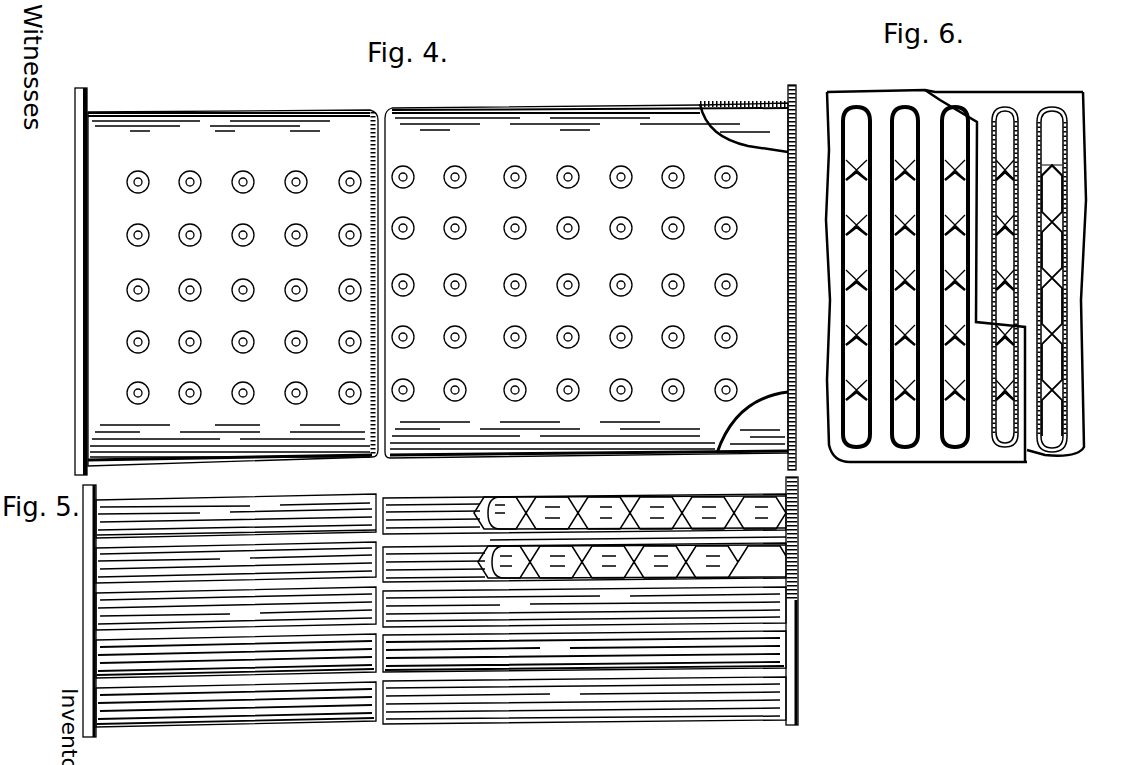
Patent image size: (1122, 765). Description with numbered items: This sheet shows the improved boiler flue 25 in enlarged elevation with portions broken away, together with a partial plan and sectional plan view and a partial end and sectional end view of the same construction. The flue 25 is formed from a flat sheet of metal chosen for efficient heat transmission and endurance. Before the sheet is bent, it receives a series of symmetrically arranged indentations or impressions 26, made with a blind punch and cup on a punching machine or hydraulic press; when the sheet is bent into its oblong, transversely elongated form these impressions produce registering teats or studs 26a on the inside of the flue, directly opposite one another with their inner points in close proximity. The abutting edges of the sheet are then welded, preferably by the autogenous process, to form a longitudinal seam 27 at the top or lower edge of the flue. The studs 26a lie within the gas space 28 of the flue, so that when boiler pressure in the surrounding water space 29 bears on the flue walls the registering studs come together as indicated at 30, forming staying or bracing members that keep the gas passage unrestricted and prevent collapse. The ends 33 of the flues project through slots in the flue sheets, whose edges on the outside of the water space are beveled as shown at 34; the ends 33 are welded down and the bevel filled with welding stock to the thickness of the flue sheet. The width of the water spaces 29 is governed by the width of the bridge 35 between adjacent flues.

In FIG. 4, the flue 25 is at (568, 122).
In FIG. 5, the flue 25 is at (320, 515).
In FIG. 4, the indentations or impressions 26 is at (514, 168).
In FIG. 5, the teats or studs 26a is at (678, 496).
In FIG. 4, the longitudinal seam 27 is at (705, 106).
In FIG. 6, the longitudinal seam 27 is at (1048, 106).
In FIG. 5, the gas space 28 is at (800, 506).
In FIG. 6, the gas space 28 is at (1000, 434).
In FIG. 5, the water space 29 is at (798, 584).
In FIG. 6, the water space 29 is at (977, 121).
In FIG. 5, the point where registering studs come together 30 is at (583, 548).
In FIG. 6, the point where registering studs come together 30 is at (950, 387).
In FIG. 5, the projecting ends of the flues 33 is at (800, 540).
In FIG. 5, the beveled edges of the slots 34 is at (798, 490).
In FIG. 5, the bridge 35 is at (798, 644).